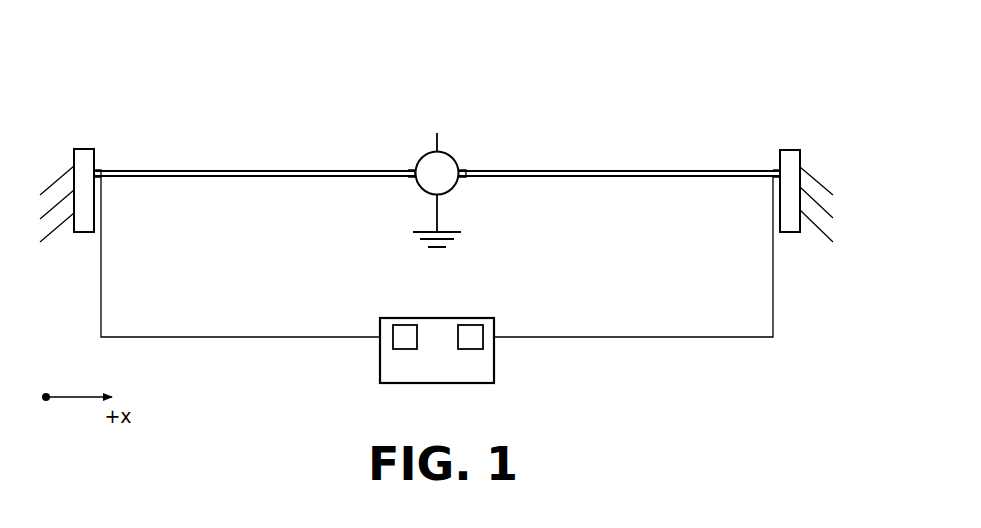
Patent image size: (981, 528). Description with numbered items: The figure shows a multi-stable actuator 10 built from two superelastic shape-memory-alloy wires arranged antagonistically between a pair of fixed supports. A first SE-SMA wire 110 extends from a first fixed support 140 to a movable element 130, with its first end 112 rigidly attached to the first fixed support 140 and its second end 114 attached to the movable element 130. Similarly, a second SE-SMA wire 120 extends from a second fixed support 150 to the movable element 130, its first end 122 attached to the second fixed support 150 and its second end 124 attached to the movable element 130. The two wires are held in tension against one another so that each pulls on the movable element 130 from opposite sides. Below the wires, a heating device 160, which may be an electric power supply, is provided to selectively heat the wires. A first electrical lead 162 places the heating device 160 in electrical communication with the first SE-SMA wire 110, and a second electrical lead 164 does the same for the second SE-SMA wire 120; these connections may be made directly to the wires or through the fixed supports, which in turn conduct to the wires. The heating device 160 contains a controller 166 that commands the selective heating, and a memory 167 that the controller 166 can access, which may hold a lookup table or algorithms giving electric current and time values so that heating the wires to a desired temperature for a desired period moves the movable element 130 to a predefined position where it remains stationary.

The multi-stable actuator 10 is at (758, 55).
The first SE-SMA wire 110 is at (205, 171).
The first end of the first SE-SMA wire 112 is at (96, 170).
The second end of the first SE-SMA wire 114 is at (400, 171).
The second SE-SMA wire 120 is at (608, 171).
The first end of the second SE-SMA wire 122 is at (760, 170).
The second end of the second SE-SMA wire 124 is at (465, 171).
The movable element 130 is at (462, 120).
The first fixed support 140 is at (83, 149).
The second fixed support 150 is at (790, 150).
The heating device 160 is at (494, 365).
The first electrical lead 162 is at (192, 337).
The second electrical lead 164 is at (617, 337).
The controller 166 is at (473, 318).
The memory 167 is at (403, 318).